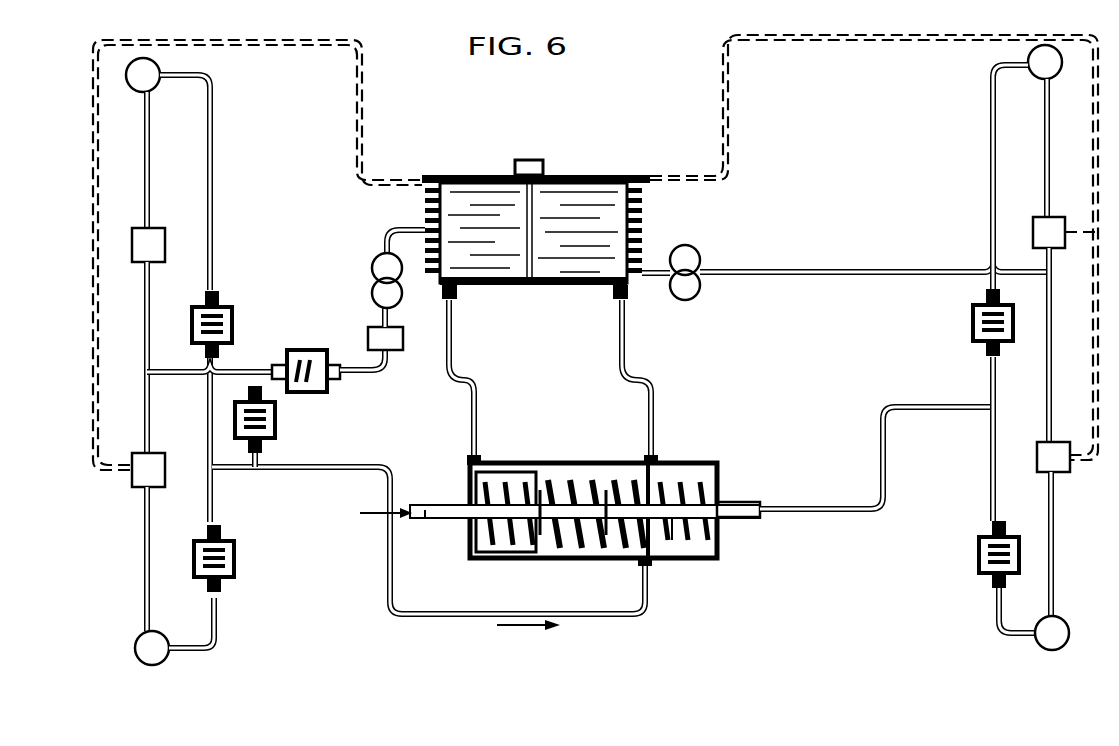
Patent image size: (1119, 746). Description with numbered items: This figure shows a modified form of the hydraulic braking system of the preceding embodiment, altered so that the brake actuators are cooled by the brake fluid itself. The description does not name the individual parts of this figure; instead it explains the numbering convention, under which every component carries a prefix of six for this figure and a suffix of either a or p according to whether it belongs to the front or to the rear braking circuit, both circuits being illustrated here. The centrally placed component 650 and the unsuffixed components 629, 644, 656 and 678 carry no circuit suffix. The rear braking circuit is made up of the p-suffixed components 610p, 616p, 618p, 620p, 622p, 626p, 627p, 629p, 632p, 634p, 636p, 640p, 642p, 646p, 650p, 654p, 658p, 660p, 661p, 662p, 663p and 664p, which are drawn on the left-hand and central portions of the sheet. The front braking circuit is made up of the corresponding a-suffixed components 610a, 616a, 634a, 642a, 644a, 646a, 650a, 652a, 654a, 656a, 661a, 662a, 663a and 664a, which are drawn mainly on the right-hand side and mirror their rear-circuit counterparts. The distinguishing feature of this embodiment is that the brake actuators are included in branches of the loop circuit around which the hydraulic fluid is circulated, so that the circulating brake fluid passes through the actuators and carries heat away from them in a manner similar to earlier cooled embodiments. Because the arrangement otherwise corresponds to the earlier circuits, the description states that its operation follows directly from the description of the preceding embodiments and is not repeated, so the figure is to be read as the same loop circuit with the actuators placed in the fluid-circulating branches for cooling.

The heat exchanger 650 is at (566, 195).
The pump 610p is at (374, 265).
The pump 610a is at (690, 263).
The conduit 616p is at (376, 302).
The conduit 616a is at (737, 276).
The filter 618p is at (368, 338).
The conduit 620p is at (345, 373).
The control valve 622p is at (298, 352).
The valve housing 626p is at (582, 499).
The conduit 627p is at (643, 588).
The conduit 629p is at (470, 462).
The conduit 629 is at (652, 448).
The spring 632p is at (562, 545).
The piston 634p is at (516, 545).
The piston 634a is at (719, 502).
The valve rod 636p is at (474, 520).
The piston 640p is at (606, 545).
The seal 642p is at (425, 520).
The seal 642a is at (672, 540).
The spring 644 is at (500, 490).
The spring 644a is at (680, 480).
The conduit 646p is at (177, 376).
The conduit 646a is at (995, 265).
The conduit 650p is at (147, 322).
The conduit 650a is at (1050, 338).
The heat exchanger 652a is at (1035, 222).
The conduit 654p is at (158, 478).
The conduit 654a is at (1037, 460).
The heat exchanger 656 is at (132, 238).
The heat exchanger 656a is at (1078, 228).
The heat exchanger 658p is at (132, 480).
The enclosure 660p is at (357, 110).
The conduit 661p is at (150, 100).
The conduit 661a is at (1043, 88).
The accumulator 662p is at (150, 70).
The accumulator 662a is at (1040, 58).
The accumulator 663p is at (148, 632).
The heat exchanger 663a is at (1052, 440).
The conduit 664p is at (155, 645).
The accumulator 664a is at (1058, 628).
The partition 678 is at (645, 478).